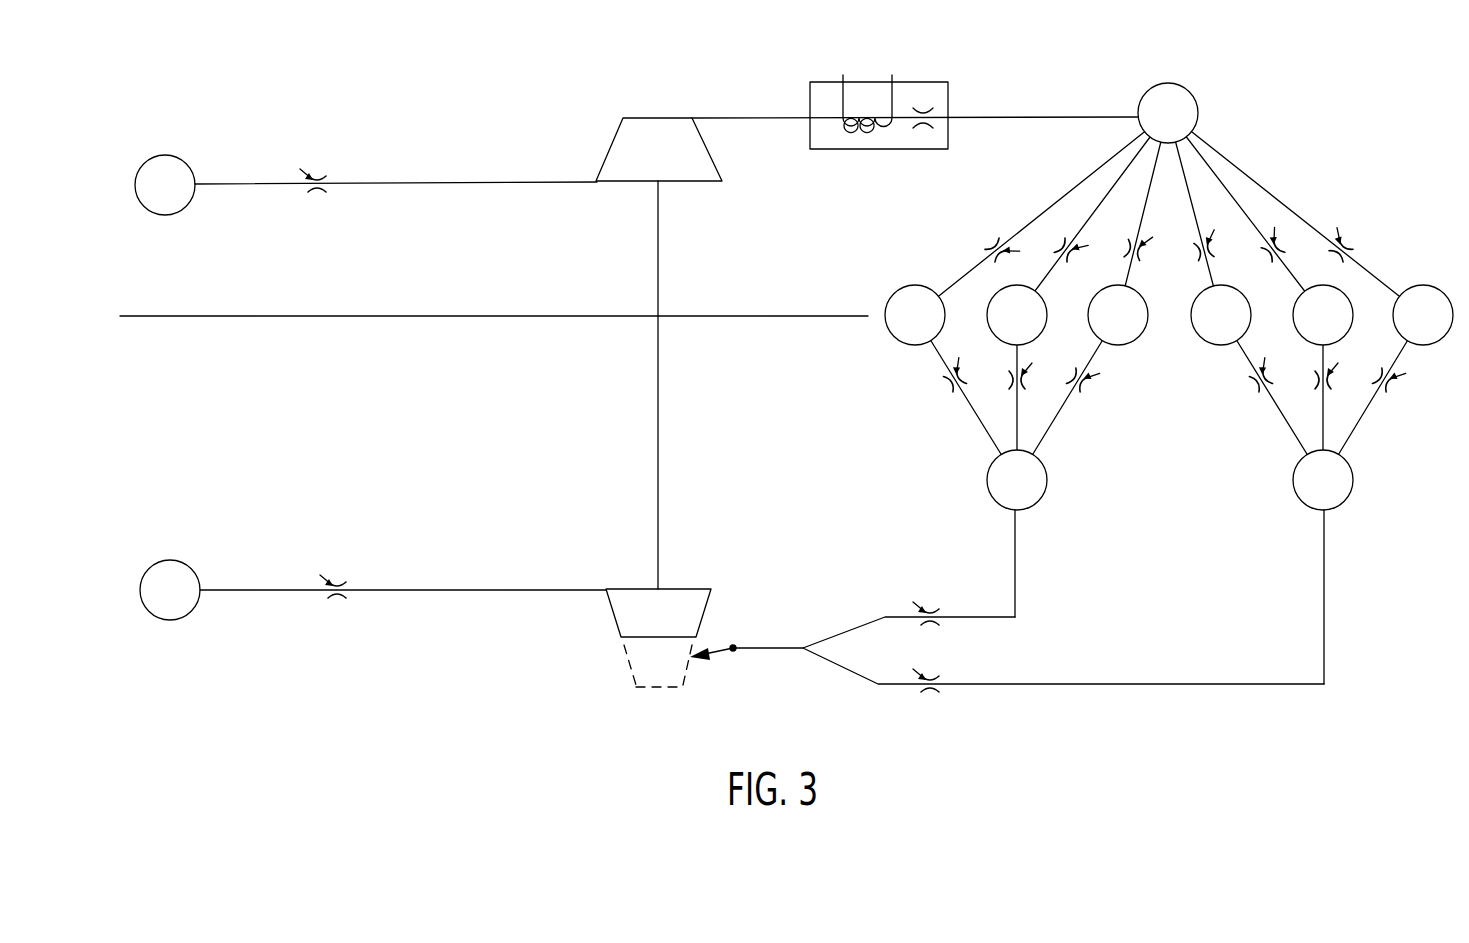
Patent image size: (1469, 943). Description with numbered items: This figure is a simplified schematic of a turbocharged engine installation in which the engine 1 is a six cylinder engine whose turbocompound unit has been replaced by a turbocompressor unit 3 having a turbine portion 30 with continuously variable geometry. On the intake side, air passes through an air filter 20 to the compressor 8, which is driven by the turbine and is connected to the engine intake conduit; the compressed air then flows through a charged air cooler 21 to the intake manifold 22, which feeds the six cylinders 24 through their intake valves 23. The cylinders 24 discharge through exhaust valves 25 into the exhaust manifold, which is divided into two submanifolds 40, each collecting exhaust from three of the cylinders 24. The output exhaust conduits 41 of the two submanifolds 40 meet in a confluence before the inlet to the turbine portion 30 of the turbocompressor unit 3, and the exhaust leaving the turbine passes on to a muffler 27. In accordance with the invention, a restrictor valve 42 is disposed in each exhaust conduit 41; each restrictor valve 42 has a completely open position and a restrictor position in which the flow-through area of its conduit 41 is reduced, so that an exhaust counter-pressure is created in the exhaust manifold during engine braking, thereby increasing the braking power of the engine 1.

The six cylinder engine 1 is at (1280, 163).
The turbocompressor unit 3 is at (622, 360).
The compressor 8 is at (698, 183).
The air filter 20 is at (317, 176).
The charged air cooler 21 is at (924, 82).
The intake manifold 22 is at (1179, 84).
The intake valves 23 is at (990, 244).
The cylinders 24 is at (893, 296).
The exhaust valves 25 is at (948, 386).
The muffler 27 is at (337, 582).
The turbine portion 30 is at (703, 587).
The submanifolds 40 is at (994, 490).
The exhaust conduits 41 is at (1016, 604).
The restrictor valve 42 is at (931, 610).